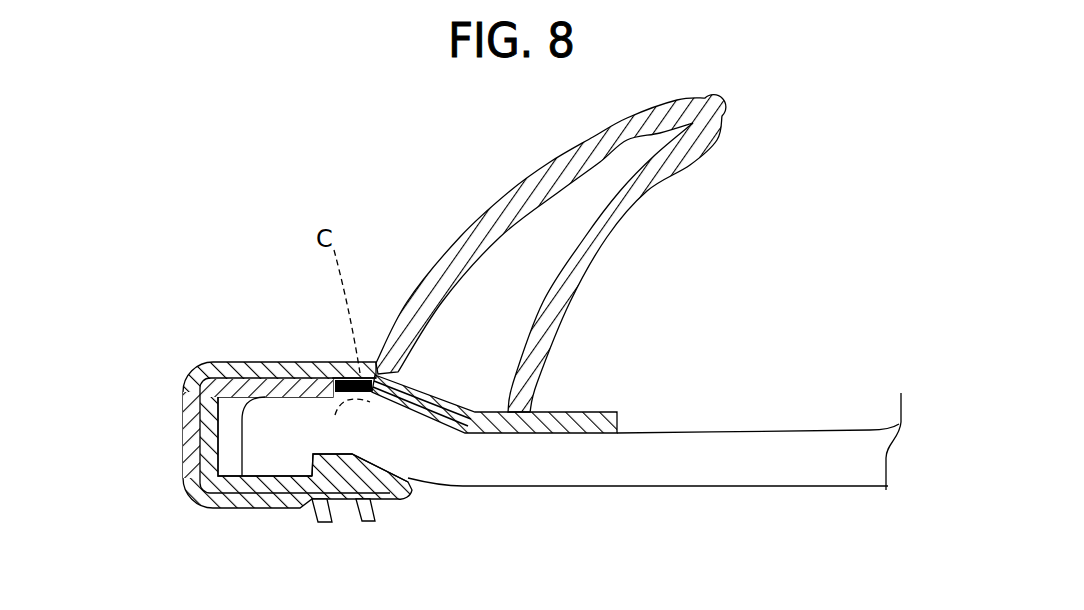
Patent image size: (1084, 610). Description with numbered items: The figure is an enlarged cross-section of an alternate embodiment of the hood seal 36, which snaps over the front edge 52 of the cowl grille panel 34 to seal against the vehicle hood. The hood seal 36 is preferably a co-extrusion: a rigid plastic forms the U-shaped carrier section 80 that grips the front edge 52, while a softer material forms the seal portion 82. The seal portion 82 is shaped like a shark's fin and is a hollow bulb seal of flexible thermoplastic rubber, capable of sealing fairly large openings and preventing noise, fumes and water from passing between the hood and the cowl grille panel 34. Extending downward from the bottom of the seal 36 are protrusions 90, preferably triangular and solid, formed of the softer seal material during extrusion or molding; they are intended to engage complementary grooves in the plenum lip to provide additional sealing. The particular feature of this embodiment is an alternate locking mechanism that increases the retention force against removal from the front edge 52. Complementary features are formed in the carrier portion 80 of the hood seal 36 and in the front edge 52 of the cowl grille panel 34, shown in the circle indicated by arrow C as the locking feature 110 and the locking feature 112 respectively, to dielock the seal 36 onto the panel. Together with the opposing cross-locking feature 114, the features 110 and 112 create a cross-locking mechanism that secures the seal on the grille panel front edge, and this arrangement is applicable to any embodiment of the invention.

The hood seal 36 is at (226, 333).
The U-shaped carrier section 80 is at (209, 403).
The front edge 52 is at (262, 436).
The locking feature 110 is at (337, 376).
The locking feature 112 is at (472, 414).
The seal portion 82 is at (592, 261).
The cowl grille panel 34 is at (722, 434).
The cross-locking feature 114 is at (362, 506).
The protrusions 90 is at (314, 512).